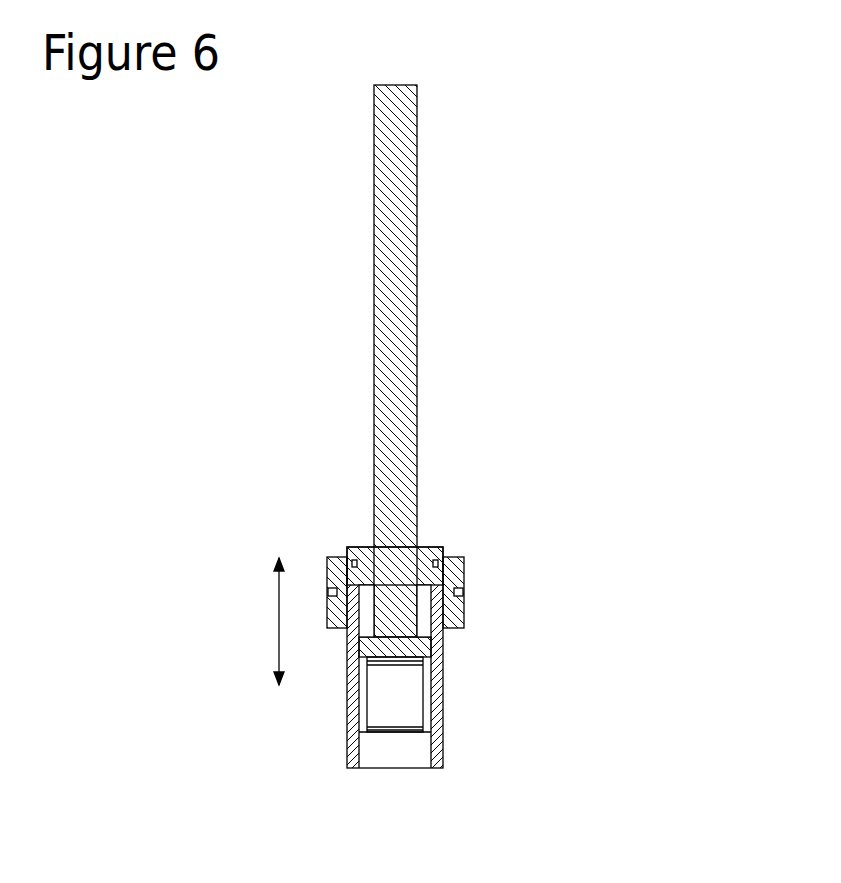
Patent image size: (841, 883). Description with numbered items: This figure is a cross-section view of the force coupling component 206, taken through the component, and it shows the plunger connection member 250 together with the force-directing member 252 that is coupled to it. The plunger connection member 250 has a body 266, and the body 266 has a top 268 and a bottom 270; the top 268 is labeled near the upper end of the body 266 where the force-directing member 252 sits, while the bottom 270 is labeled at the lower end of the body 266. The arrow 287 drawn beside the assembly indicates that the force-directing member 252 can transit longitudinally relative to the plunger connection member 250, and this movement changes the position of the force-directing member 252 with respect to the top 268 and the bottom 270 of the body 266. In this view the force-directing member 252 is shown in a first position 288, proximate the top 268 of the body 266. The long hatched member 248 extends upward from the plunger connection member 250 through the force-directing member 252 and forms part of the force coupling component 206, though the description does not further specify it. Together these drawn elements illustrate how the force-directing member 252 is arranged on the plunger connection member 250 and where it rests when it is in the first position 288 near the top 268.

The force coupling component 206 is at (603, 78).
The rod 248 is at (442, 283).
The plunger connection member 250 is at (447, 706).
The force-directing member 252 is at (465, 573).
The body 266 is at (445, 687).
The top 268 is at (345, 542).
The bottom 270 is at (368, 797).
The arrow 287 is at (279, 618).
The first position 288 is at (568, 595).